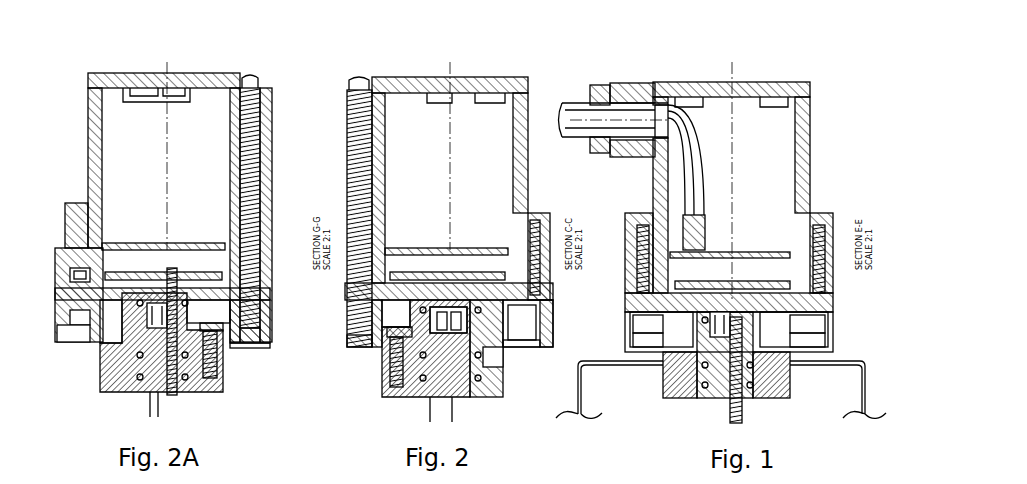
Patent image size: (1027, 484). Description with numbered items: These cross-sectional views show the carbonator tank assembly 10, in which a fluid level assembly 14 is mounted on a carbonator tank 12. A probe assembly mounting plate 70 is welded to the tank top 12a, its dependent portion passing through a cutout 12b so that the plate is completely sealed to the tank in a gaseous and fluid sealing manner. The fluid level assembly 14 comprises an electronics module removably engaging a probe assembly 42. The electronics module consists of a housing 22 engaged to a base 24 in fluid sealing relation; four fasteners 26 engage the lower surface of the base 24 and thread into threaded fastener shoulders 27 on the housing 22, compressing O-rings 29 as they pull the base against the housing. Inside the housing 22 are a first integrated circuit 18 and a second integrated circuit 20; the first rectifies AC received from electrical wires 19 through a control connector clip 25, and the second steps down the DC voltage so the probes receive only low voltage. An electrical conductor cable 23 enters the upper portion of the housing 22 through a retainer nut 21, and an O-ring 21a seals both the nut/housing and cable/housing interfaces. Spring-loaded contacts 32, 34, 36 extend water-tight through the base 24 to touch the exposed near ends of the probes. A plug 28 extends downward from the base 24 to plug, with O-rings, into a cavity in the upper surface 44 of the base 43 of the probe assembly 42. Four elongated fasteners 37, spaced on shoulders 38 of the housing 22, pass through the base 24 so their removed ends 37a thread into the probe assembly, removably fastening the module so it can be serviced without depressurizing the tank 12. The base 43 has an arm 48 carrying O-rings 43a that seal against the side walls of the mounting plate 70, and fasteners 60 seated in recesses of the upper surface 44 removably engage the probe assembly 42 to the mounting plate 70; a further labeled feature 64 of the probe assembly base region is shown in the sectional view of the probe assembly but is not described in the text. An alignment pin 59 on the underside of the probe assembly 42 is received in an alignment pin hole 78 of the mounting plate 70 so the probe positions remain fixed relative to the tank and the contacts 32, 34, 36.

In FIG. 2A, the carbonator tank assembly 10 is at (67, 318).
In FIG. 1, the carbonator tank assembly 10 is at (806, 70).
In FIG. 1, the carbonator tank 12 is at (721, 358).
In FIG. 1, the tank top 12a is at (826, 372).
In FIG. 1, the cutout 12b is at (655, 373).
In FIG. 2, the fluid level assembly 14 is at (550, 265).
In FIG. 2A, the first integrated circuit 18 is at (140, 243).
In FIG. 1, the first integrated circuit 18 is at (745, 251).
In FIG. 1, the electrical wires 19 is at (708, 152).
In FIG. 2A, the second integrated circuit 20 is at (143, 276).
In FIG. 1, the second integrated circuit 20 is at (720, 240).
In FIG. 1, the retainer nut 21 is at (610, 80).
In FIG. 1, the O-ring 21a is at (655, 97).
In FIG. 2A, the housing 22 is at (88, 118).
In FIG. 2, the housing 22 is at (528, 178).
In FIG. 1, the housing 22 is at (810, 192).
In FIG. 1, the electrical conductor cable 23 is at (564, 98).
In FIG. 2A, the base 24 is at (265, 288).
In FIG. 2, the base 24 is at (344, 288).
In FIG. 1, the base 24 is at (834, 294).
In FIG. 1, the control connector clip 25 is at (712, 212).
In FIG. 2, the fasteners 26 is at (534, 246).
In FIG. 2, the threaded fastener shoulders 27 is at (548, 216).
In FIG. 2, the plug 28 is at (468, 323).
In FIG. 2, the O-rings 29 is at (392, 249).
In FIG. 2, the contact 32 is at (446, 306).
In FIG. 2, the contact 34 is at (467, 306).
In FIG. 1, the contact 36 is at (735, 312).
In FIG. 2A, the elongated fasteners 37 is at (272, 78).
In FIG. 2, the elongated fasteners 37 is at (335, 195).
In FIG. 2A, the removed ends 37a is at (250, 342).
In FIG. 2A, the shoulders 38 is at (272, 120).
In FIG. 2A, the probe assembly 42 is at (268, 334).
In FIG. 2, the probe assembly 42 is at (346, 329).
In FIG. 1, the probe assembly 42 is at (834, 312).
In FIG. 2A, the base 43 is at (122, 296).
In FIG. 2, the O-rings 43a is at (400, 385).
In FIG. 2A, the upper surface 44 is at (80, 340).
In FIG. 2A, the arm 48 is at (178, 388).
In FIG. 2, the alignment pin 59 is at (505, 356).
In FIG. 2A, the fasteners 60 is at (220, 362).
In FIG. 2, the fasteners 60 is at (387, 376).
In FIG. 2A, the passage 64 is at (80, 330).
In FIG. 2A, the probe assembly mounting plate 70 is at (108, 378).
In FIG. 2, the probe assembly mounting plate 70 is at (378, 360).
In FIG. 1, the probe assembly mounting plate 70 is at (683, 392).
In FIG. 2, the alignment pin hole 78 is at (500, 366).